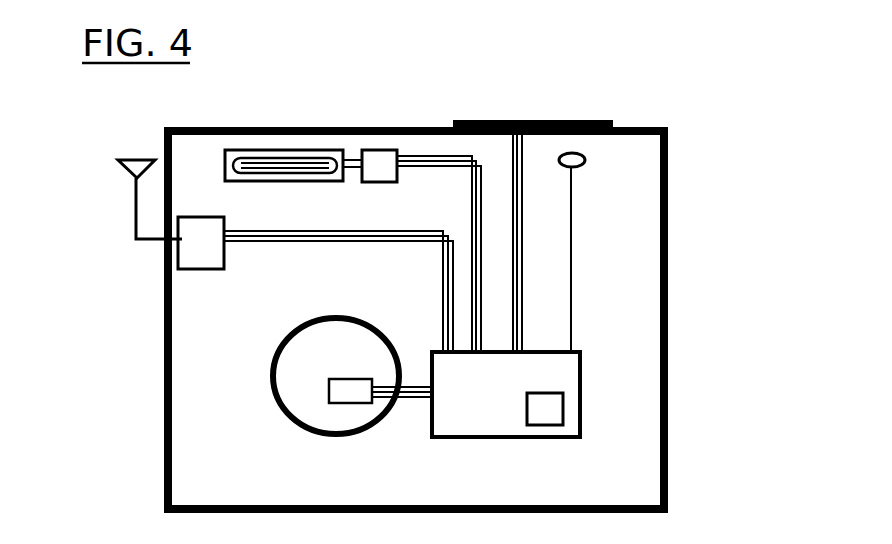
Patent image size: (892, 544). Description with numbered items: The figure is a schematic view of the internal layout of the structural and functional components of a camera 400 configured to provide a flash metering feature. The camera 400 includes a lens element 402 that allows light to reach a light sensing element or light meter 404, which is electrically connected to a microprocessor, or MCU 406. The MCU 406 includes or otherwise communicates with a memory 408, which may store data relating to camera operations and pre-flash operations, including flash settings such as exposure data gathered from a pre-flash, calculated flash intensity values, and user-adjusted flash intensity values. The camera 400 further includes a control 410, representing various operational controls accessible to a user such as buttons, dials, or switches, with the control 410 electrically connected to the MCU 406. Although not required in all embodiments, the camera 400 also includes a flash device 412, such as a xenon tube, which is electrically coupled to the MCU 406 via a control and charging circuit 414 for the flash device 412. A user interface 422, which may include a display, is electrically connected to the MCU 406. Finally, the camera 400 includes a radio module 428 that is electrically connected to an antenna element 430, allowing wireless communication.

The camera 400 is at (668, 443).
The lens element 402 is at (277, 346).
The light meter 404 is at (329, 393).
The microprocessor 406 is at (580, 368).
The memory 408 is at (563, 400).
The control 410 is at (585, 157).
The flash device 412 is at (288, 150).
The control and charging circuit 414 is at (374, 150).
The user interface 422 is at (553, 120).
The radio module 428 is at (200, 269).
The antenna element 430 is at (132, 212).